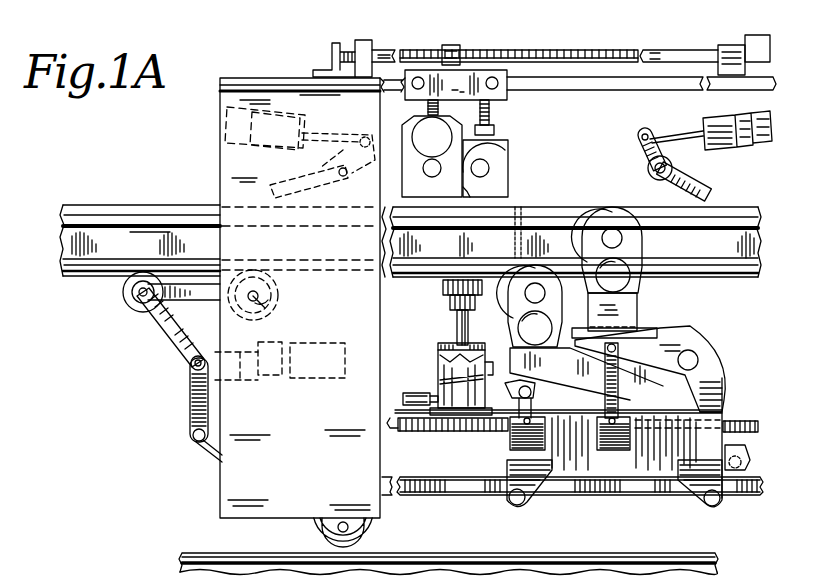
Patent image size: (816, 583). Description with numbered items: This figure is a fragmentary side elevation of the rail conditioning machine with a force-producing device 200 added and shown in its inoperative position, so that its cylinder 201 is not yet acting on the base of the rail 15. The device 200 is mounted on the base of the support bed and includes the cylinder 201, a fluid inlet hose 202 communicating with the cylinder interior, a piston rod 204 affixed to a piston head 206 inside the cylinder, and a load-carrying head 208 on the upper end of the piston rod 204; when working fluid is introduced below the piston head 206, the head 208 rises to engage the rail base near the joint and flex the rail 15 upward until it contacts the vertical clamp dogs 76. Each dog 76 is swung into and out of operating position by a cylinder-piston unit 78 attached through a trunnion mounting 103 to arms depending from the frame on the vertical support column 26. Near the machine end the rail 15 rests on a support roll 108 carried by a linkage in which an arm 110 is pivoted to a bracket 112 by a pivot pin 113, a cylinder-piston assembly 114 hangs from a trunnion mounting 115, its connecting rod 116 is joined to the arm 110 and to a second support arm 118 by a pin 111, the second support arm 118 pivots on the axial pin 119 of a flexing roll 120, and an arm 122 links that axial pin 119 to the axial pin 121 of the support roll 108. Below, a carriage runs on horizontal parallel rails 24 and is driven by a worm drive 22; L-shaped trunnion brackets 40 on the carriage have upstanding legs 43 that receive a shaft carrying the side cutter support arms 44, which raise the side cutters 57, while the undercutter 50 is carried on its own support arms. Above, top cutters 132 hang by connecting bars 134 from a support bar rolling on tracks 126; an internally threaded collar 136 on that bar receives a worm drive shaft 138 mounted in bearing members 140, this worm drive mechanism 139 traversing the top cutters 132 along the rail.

The rail 15 is at (79, 205).
The worm drive 22 is at (745, 440).
The horizontal parallel spaced rails 24 is at (448, 485).
The vertical support column 26 is at (314, 482).
The trunnion 40 is at (714, 374).
The upstanding vertical leg 43 is at (725, 392).
The side cutter support arm 44 is at (682, 330).
The undercutter 50 is at (514, 290).
The side cutter 57 is at (644, 242).
The vertical clamp dog 76 is at (343, 168).
The cylinder-piston unit 78 is at (220, 130).
The trunnion mounting 103 is at (300, 180).
The support roll 108 is at (280, 295).
The arm 110 is at (190, 402).
The pin 111 is at (190, 368).
The bracket 112 is at (205, 462).
The pivot pin 113 is at (192, 440).
The cylinder-piston assembly 114 is at (318, 344).
The trunnion mounting 115 is at (290, 380).
The connecting rod 116 is at (243, 385).
The second support arm 118 is at (168, 340).
The axial pin 119 is at (138, 306).
The flexing roll 120 is at (123, 290).
The axial pin 121 is at (270, 308).
The arm 122 is at (180, 297).
The track 126 is at (628, 85).
The top cutter 132 is at (505, 183).
The connecting bar 134 is at (430, 101).
The internally threaded collar 136 is at (450, 45).
The worm drive shaft 138 is at (537, 50).
The worm drive mechanism 139 is at (604, 48).
The bearing member 140 is at (362, 42).
The force-producing device 200 is at (438, 358).
The cylinder 201 is at (495, 375).
The fluid inlet hose 202 is at (426, 396).
The piston rod 204 is at (456, 314).
The piston head 206 is at (458, 432).
The load-carrying head 208 is at (448, 284).